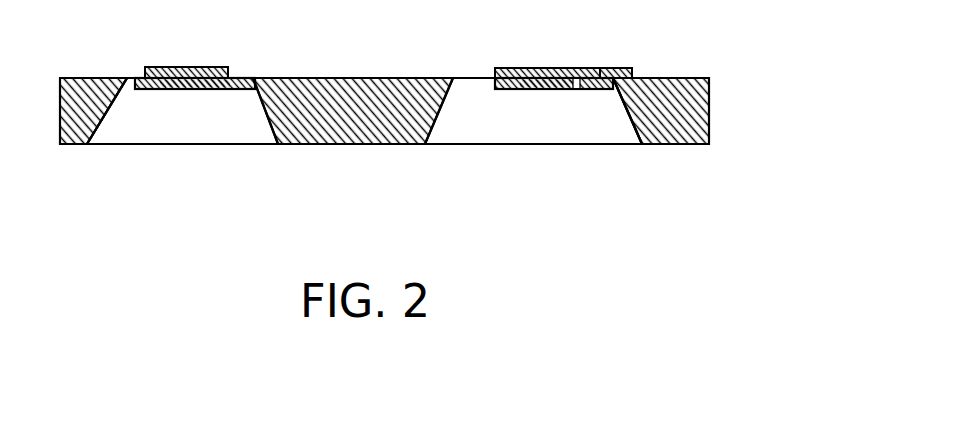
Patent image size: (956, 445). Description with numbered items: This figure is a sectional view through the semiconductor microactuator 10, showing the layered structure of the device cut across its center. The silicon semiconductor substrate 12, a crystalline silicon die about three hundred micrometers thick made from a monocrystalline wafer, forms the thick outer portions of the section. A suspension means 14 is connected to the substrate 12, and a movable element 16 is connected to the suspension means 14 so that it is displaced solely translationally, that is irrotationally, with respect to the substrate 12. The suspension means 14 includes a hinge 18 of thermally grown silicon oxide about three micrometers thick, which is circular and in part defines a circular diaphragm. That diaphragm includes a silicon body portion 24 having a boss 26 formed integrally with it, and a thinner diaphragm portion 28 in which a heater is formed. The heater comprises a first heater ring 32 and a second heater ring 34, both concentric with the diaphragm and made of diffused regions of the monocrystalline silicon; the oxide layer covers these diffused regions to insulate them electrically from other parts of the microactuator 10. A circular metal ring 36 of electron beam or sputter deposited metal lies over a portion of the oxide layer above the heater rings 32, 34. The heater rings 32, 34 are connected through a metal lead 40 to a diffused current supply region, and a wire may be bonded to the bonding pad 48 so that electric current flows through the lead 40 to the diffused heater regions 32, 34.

The semiconductor microactuator 10 is at (123, 242).
The silicon semiconductor substrate 12 is at (78, 78).
The suspension means 14 is at (117, 144).
The movable element 16 is at (336, 78).
The hinge 18 is at (117, 144).
The silicon body portion 24 is at (452, 146).
The boss 26 is at (350, 144).
The thinner diaphragm portion 28 is at (183, 89).
The first heater ring 32 is at (162, 89).
The second heater ring 34 is at (206, 89).
The circular metal ring 36 is at (196, 67).
The metal lead 40 is at (577, 88).
The bonding pad 48 is at (617, 69).